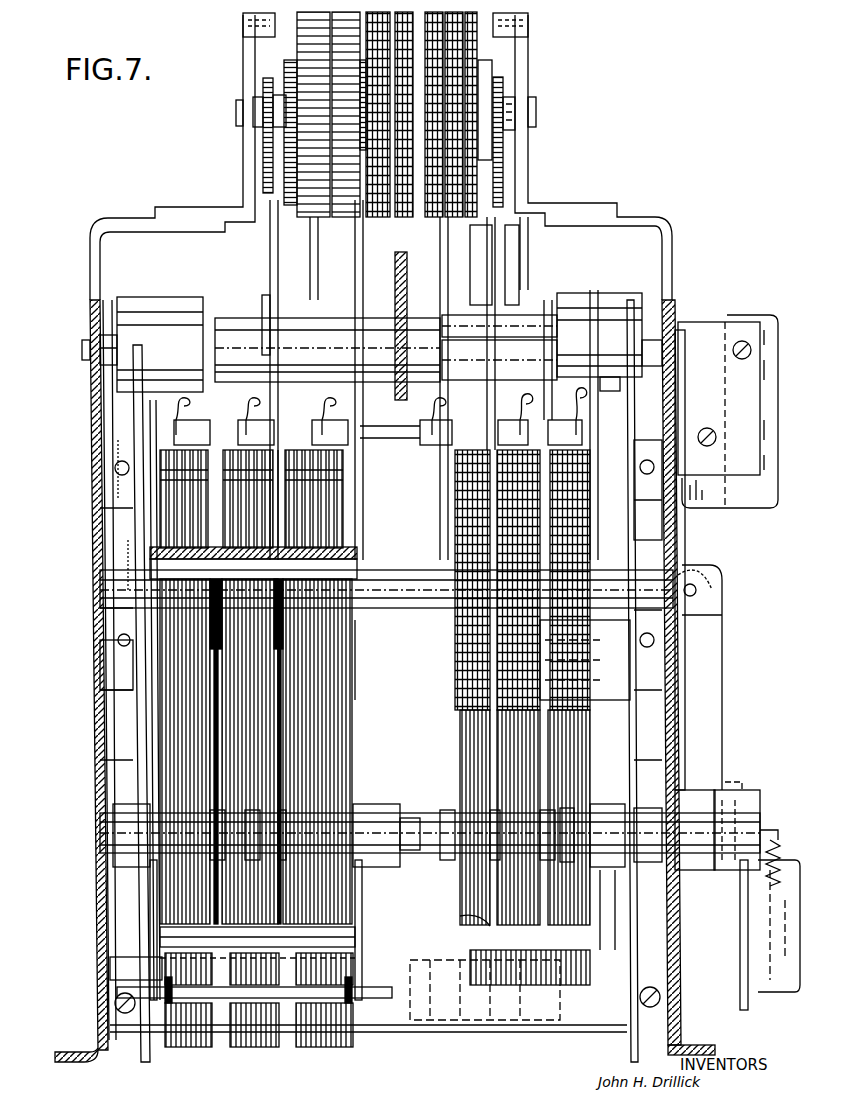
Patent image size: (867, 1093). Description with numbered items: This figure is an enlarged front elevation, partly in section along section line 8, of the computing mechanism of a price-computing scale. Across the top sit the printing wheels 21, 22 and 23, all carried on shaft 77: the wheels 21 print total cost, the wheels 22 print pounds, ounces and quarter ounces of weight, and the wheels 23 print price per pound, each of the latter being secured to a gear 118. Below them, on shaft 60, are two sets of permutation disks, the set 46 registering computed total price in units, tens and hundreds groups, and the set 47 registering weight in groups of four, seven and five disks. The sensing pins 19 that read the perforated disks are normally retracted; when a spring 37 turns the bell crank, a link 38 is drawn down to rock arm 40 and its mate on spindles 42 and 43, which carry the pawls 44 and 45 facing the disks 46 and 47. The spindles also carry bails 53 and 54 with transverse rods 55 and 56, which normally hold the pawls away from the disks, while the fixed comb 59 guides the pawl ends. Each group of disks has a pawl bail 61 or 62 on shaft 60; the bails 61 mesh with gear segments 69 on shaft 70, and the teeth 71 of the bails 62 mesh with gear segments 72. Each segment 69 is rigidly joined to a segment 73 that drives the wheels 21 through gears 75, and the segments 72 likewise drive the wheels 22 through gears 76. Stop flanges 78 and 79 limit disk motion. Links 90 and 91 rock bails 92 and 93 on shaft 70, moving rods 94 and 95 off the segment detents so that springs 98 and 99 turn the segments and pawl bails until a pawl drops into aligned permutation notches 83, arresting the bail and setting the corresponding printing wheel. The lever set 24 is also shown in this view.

The section line 8 is at (282, 78).
The sensing pins 19 is at (228, 1000).
The printing wheels 21 is at (314, 217).
The printing wheels 22 is at (475, 42).
The printing wheels 23 is at (420, 217).
The levers 24 is at (500, 230).
The spring 37 is at (776, 840).
The link 38 is at (748, 1000).
The arm 40 is at (742, 800).
The spindle 42 is at (390, 815).
The spindle 43 is at (552, 815).
The pawls 44 is at (172, 745).
The pawls 45 is at (470, 760).
The permutation disks 46 is at (172, 450).
The permutation disks 47 is at (508, 445).
The bail 53 is at (150, 900).
The bail 54 is at (450, 892).
The transverse rod 55 is at (340, 936).
The transverse rod 56 is at (460, 916).
The fixed comb 59 is at (368, 1034).
The shaft 60 is at (384, 578).
The pawl bail 61 is at (156, 660).
The pawl bail 62 is at (450, 650).
The gear segment 69 is at (284, 450).
The shaft 70 is at (677, 330).
The teeth 71 is at (450, 614).
The gear segment 72 is at (490, 404).
The segment 73 is at (278, 292).
The gear 75 is at (290, 70).
The gear 76 is at (480, 64).
The shaft 77 is at (515, 100).
The stop flange 78 is at (150, 552).
The stop flange 79 is at (450, 466).
The permutation notches 83 is at (585, 676).
The link 90 is at (133, 522).
The link 91 is at (633, 770).
The bail 92 is at (178, 312).
The bail 93 is at (604, 305).
The rod 94 is at (236, 325).
The rod 95 is at (522, 318).
The spring 98 is at (200, 388).
The spring 99 is at (418, 430).
The gear 118 is at (350, 217).